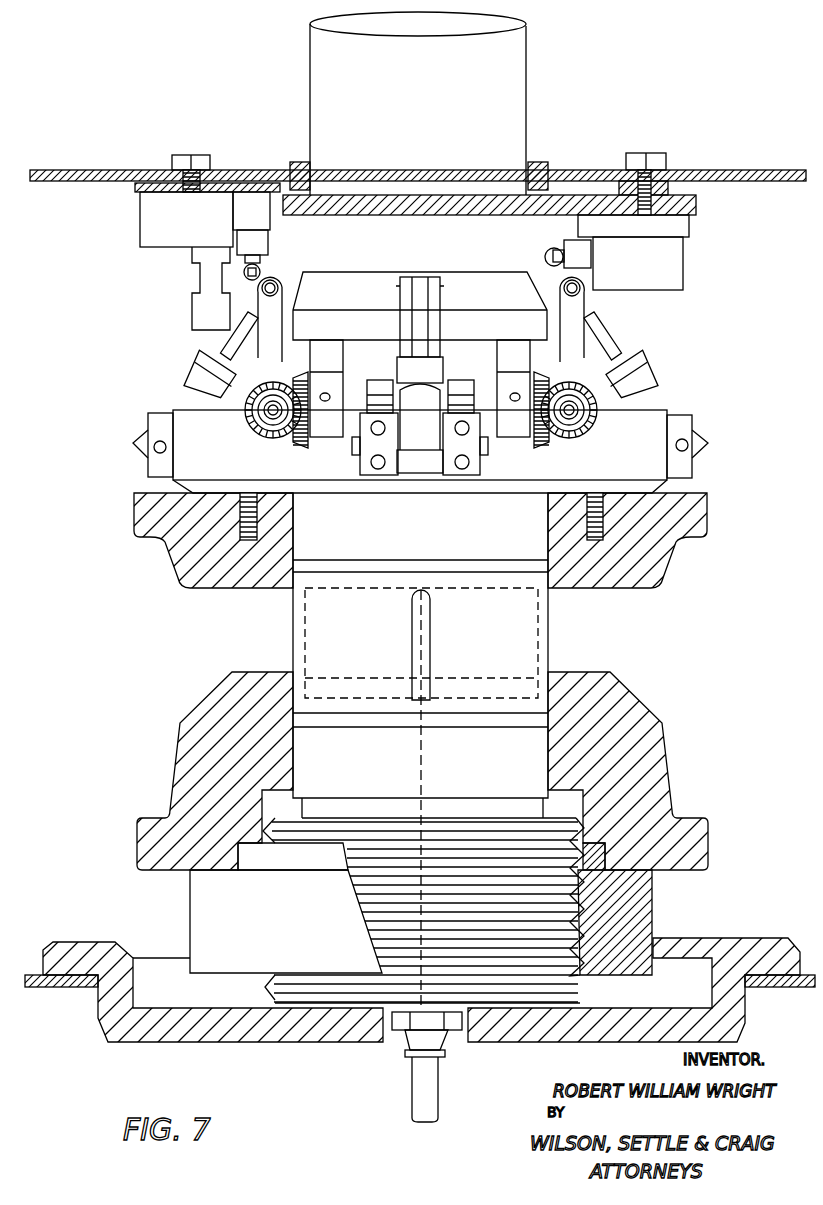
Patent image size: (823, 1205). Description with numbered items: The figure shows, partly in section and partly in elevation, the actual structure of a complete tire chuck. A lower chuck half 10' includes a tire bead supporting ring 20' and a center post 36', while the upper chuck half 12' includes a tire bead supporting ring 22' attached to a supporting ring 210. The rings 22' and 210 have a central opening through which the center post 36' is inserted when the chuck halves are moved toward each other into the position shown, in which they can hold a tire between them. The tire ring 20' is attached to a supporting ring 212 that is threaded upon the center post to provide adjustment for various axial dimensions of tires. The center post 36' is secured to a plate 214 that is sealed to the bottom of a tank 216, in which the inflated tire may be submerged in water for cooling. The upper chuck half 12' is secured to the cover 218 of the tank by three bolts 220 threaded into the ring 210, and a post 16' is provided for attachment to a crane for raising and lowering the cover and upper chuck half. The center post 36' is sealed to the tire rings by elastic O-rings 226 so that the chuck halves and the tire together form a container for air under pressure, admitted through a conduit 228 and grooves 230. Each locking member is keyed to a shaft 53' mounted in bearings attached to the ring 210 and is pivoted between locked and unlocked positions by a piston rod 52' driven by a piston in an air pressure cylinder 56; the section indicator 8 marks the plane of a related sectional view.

The section line indicator 8- 8 is at (88, 352).
The lower chuck half 10' is at (761, 835).
The upper chuck half 12' is at (457, 527).
The post 16' is at (390, 103).
The tire bead supporting ring 20' is at (427, 771).
The tire bead supporting ring 22' is at (689, 574).
The center post 36' is at (444, 750).
The piston rod 52' is at (425, 319).
The shaft 53' is at (421, 424).
The air pressure cylinder 56 is at (175, 387).
The supporting ring 210 is at (590, 475).
The supporting ring 212 is at (652, 907).
The plate 214 is at (735, 938).
The tank 216 is at (53, 987).
The cover 218 is at (100, 150).
The bolt 220 is at (200, 275).
The O-ring 226 is at (384, 563).
The conduit 228 is at (430, 1092).
The groove 230 is at (430, 631).